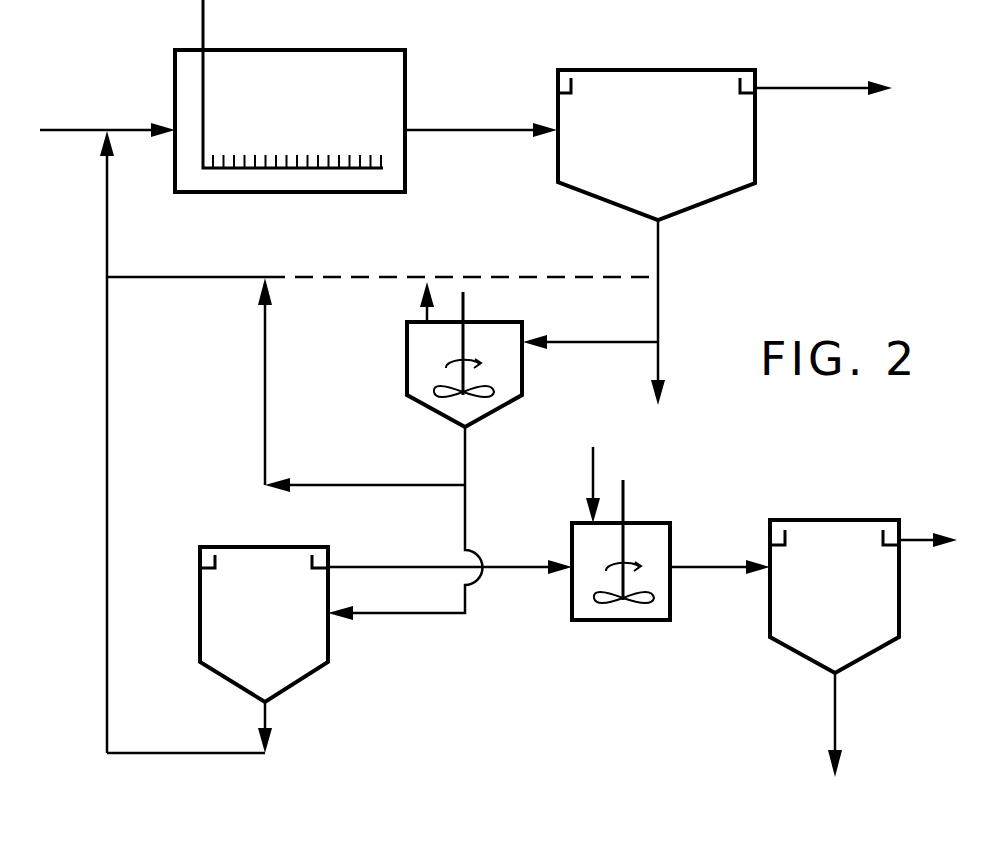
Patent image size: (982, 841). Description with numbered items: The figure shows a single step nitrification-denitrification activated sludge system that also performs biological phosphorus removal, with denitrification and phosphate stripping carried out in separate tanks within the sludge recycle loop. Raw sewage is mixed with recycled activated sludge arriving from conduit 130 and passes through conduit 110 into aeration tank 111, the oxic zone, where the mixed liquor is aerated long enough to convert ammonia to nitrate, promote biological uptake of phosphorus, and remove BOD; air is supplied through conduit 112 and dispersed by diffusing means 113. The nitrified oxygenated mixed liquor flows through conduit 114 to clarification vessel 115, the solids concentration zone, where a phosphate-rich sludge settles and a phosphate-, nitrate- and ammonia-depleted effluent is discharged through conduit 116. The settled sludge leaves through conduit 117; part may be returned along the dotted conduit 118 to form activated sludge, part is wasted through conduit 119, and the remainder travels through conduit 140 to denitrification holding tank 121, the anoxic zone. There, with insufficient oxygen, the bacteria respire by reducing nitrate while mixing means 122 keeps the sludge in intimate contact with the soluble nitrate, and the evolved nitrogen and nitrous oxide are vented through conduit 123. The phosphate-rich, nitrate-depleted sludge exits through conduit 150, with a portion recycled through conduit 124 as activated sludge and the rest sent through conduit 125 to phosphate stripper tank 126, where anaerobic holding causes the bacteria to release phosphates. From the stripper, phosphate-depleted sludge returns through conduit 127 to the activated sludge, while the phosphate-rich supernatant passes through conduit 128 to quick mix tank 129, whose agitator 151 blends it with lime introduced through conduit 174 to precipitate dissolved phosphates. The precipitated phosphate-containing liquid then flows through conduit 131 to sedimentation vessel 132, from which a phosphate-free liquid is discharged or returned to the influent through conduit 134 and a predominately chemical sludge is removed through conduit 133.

The conduit 110 is at (78, 128).
The aeration tank 111 is at (407, 58).
The conduit 112 is at (203, 20).
The diffusing means 113 is at (317, 165).
The conduit 114 is at (463, 133).
The clarification vessel 115 is at (755, 147).
The conduit 116 is at (830, 87).
The conduit 117 is at (658, 258).
The conduit 118 is at (512, 277).
The conduit 119 is at (658, 357).
The denitrification holding tank 121 is at (523, 322).
The mixing means 122 is at (443, 390).
The conduit 123 is at (423, 313).
The conduit 124 is at (265, 365).
The conduit 125 is at (465, 515).
The phosphate stripper tank 126 is at (317, 670).
The conduit 127 is at (165, 757).
The conduit 128 is at (505, 570).
The quick mix tank 129 is at (627, 620).
The conduit 130 is at (107, 233).
The conduit 131 is at (707, 572).
The sedimentation vessel 132 is at (899, 592).
The conduit 133 is at (863, 722).
The conduit 134 is at (915, 537).
The conduit 140 is at (590, 344).
The conduit 150 is at (465, 465).
The agitator of second mixer 151 is at (600, 600).
The conduit 174 is at (606, 455).